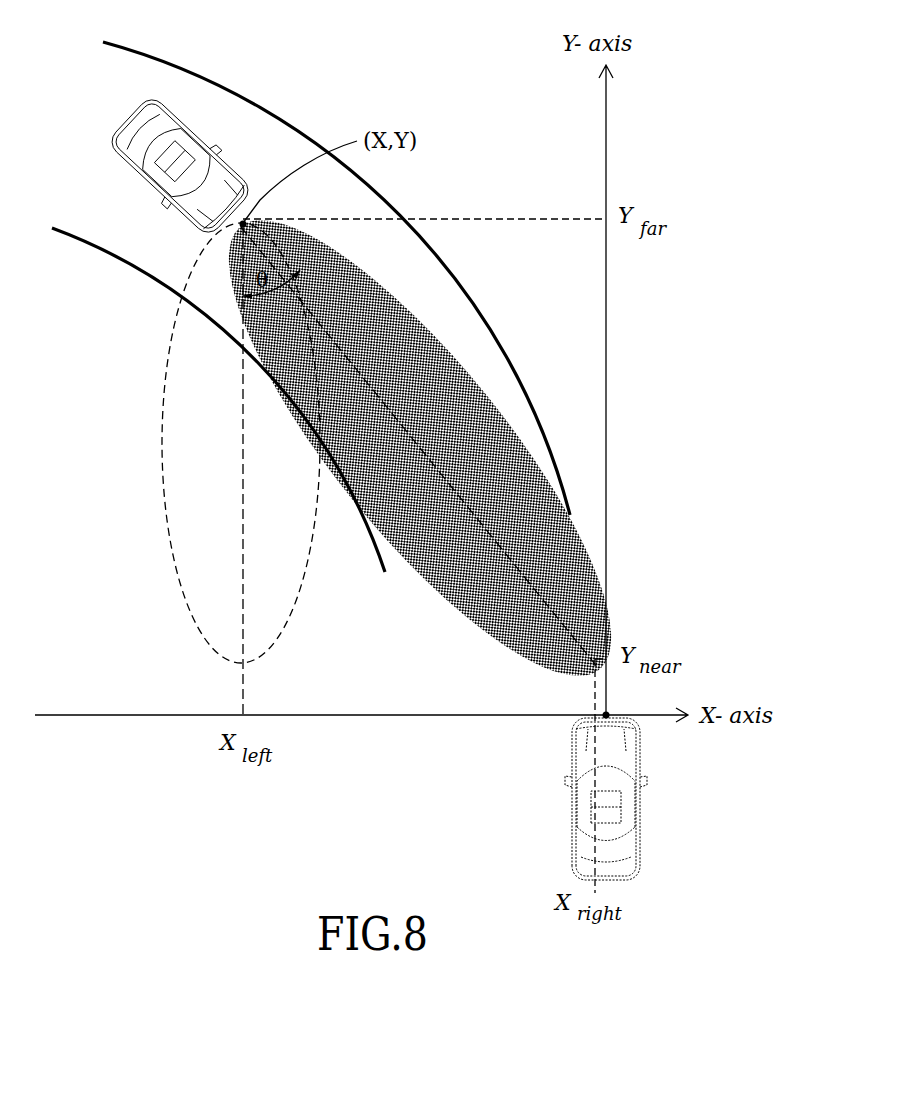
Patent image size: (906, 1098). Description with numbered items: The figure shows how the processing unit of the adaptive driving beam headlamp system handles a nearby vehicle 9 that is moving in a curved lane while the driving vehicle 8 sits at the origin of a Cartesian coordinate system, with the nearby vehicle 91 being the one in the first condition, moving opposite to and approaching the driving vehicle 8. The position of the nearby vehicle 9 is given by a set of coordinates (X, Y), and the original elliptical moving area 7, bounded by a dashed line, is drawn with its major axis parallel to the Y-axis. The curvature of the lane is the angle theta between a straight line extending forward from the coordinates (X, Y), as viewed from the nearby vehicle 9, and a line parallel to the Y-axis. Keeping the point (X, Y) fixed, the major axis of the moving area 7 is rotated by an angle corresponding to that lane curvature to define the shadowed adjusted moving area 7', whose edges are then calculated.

The moving area 7 is at (196, 443).
The adjusted moving area 7' is at (420, 448).
The driving vehicle 8 is at (657, 856).
The nearby vehicle 9 is at (202, 122).
The nearby vehicle 91 is at (243, 221).